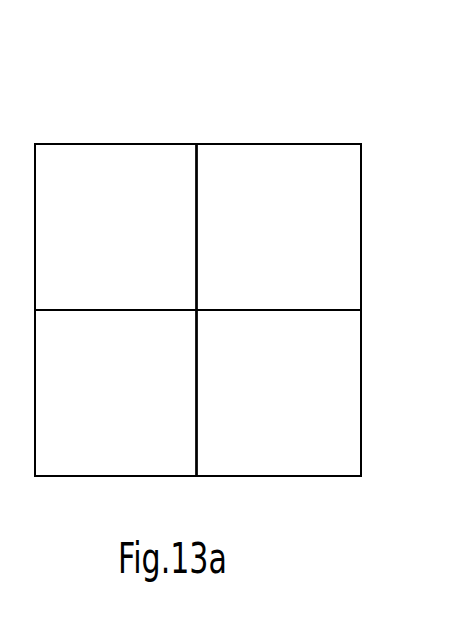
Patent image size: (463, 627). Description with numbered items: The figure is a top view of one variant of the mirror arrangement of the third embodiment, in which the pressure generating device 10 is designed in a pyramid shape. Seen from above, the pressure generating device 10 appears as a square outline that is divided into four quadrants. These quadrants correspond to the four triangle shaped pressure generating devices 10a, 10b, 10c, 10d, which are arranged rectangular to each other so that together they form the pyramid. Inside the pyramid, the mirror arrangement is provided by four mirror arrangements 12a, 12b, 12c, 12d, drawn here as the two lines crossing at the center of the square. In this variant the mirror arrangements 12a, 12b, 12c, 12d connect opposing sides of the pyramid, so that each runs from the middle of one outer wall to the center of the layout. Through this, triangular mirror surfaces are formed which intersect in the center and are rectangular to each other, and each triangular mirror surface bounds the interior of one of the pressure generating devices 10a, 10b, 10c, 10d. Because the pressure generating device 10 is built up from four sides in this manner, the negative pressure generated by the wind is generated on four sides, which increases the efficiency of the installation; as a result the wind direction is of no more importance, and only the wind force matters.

The pressure generating device 10 is at (297, 120).
The triangle shaped pressure generating device 10a is at (275, 468).
The triangle shaped pressure generating device 10b is at (361, 268).
The triangle shaped pressure generating device 10c is at (132, 143).
The triangle shaped pressure generating device 10d is at (35, 397).
The mirror arrangement 12a is at (197, 390).
The mirror arrangement 12b is at (197, 248).
The mirror arrangement 12c is at (113, 310).
The mirror arrangement 12d is at (196, 340).